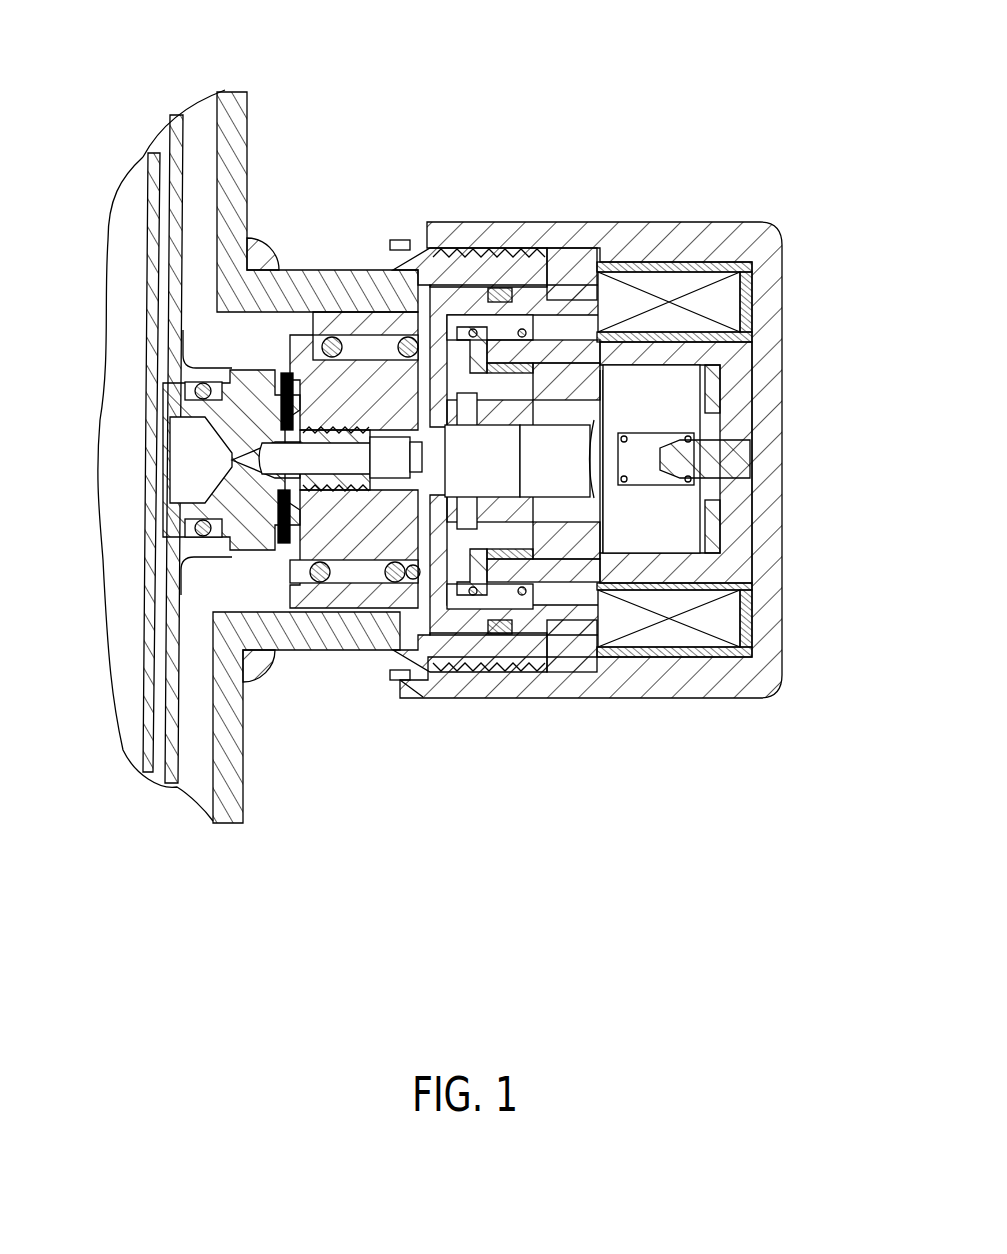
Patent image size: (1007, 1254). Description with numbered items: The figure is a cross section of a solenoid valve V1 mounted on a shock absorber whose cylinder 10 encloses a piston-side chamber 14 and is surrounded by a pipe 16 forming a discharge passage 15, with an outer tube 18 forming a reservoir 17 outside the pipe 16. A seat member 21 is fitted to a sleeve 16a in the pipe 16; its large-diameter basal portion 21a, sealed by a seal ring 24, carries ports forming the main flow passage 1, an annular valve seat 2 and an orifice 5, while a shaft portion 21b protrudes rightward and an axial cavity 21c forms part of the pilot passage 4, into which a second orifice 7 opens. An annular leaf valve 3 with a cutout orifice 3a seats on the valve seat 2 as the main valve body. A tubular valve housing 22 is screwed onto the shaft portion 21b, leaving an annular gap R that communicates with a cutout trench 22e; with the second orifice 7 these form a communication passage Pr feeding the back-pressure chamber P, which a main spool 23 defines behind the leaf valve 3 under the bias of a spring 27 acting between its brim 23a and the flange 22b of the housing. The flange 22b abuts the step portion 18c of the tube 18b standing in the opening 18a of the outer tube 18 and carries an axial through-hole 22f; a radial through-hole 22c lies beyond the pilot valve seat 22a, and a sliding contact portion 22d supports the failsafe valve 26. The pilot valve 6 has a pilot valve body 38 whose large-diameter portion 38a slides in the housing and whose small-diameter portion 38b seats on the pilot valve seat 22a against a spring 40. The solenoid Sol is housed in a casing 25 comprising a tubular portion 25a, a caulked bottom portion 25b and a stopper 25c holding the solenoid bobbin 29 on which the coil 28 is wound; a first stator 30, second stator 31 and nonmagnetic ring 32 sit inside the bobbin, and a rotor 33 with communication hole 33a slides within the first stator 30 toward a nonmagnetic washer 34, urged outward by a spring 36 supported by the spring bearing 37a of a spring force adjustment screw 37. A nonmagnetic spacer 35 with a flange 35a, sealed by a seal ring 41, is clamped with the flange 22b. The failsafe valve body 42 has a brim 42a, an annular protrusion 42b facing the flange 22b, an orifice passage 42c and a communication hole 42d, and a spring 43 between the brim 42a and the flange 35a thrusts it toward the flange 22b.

The main flow passage 1 is at (165, 448).
The valve seat 2 is at (262, 268).
The leaf valve 3 is at (265, 420).
The cutout orifice 3a is at (278, 600).
The pilot passage 4 is at (400, 622).
The orifice 5 is at (215, 460).
The pilot valve 6 is at (700, 372).
The second orifice 7 is at (287, 660).
The cylinder 10 is at (147, 210).
The piston-side chamber 14 is at (122, 487).
The discharge passage 15 is at (167, 173).
The pipe 16 is at (190, 138).
The sleeve 16a is at (205, 362).
The reservoir 17 is at (197, 777).
The outer tube 18 is at (247, 100).
The opening 18a is at (213, 612).
The tube 18b is at (440, 250).
The step portion 18c is at (485, 675).
The seat member 21 is at (180, 558).
The basal portion 21a is at (240, 590).
The shaft portion 21b is at (362, 452).
The cavity 21c is at (360, 620).
The valve housing 22 is at (392, 380).
The pilot valve seat 22a is at (470, 652).
The flange 22b is at (470, 315).
The through-hole 22c is at (530, 642).
The sliding contact portion 22d is at (560, 622).
The cutout trench 22e is at (330, 430).
The through-hole 22f is at (478, 330).
The main spool 23 is at (290, 560).
The brim 23a is at (290, 360).
The seal ring 24 is at (200, 538).
The casing 25 is at (790, 240).
The tubular portion 25a is at (680, 245).
The bottom portion 25b is at (785, 580).
The stopper 25c is at (600, 330).
The failsafe valve 26 is at (540, 350).
The spring 27 is at (332, 338).
The coil 28 is at (720, 300).
The solenoid bobbin 29 is at (755, 320).
The first stator 30 is at (740, 540).
The second stator 31 is at (650, 662).
The nonmagnetic ring 32 is at (700, 682).
The rotor 33 is at (712, 510).
The communication hole 33a is at (700, 415).
The nonmagnetic washer 34 is at (712, 400).
The spacer 35 is at (570, 420).
The flange 35a is at (580, 440).
The spring 36 is at (745, 600).
The spring force adjustment screw 37 is at (748, 442).
The spring bearing 37a is at (720, 470).
The pilot valve body 38 is at (745, 620).
The large-diameter portion 38a is at (615, 350).
The small-diameter portion 38b is at (620, 600).
The spring 40 is at (505, 632).
The seal ring 41 is at (545, 300).
The failsafe valve body 42 is at (540, 655).
The brim 42a is at (470, 285).
The annular protrusion 42b is at (410, 672).
The orifice passage 42c is at (400, 240).
The communication hole 42d is at (545, 250).
The spring 43 is at (560, 562).
The back-pressure chamber P is at (300, 545).
The communication passage Pr is at (158, 520).
The annular gap R is at (320, 585).
The solenoid Sol is at (676, 250).
The solenoid valve V1 is at (745, 165).